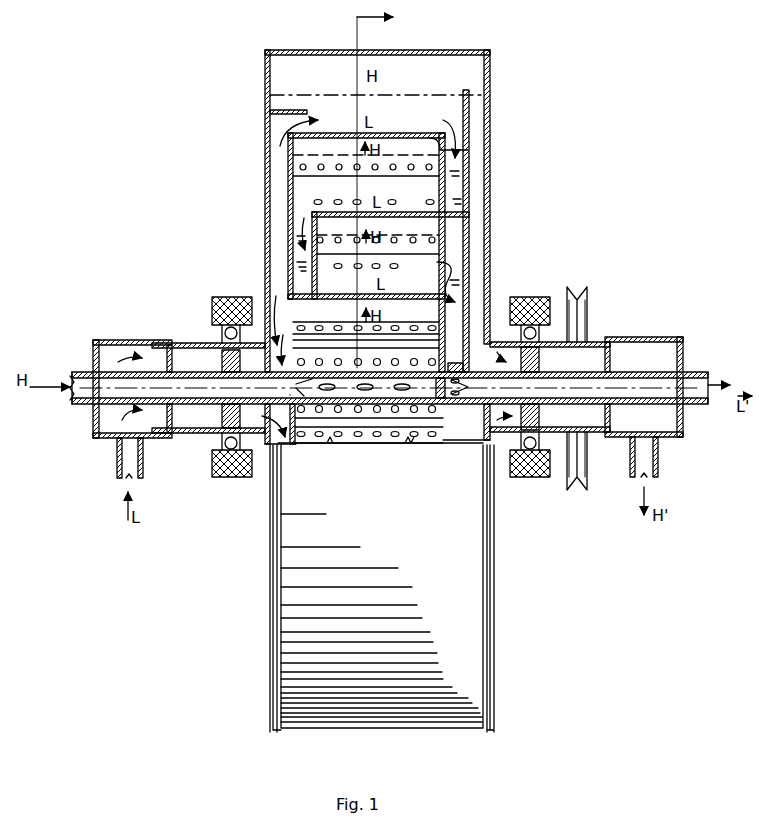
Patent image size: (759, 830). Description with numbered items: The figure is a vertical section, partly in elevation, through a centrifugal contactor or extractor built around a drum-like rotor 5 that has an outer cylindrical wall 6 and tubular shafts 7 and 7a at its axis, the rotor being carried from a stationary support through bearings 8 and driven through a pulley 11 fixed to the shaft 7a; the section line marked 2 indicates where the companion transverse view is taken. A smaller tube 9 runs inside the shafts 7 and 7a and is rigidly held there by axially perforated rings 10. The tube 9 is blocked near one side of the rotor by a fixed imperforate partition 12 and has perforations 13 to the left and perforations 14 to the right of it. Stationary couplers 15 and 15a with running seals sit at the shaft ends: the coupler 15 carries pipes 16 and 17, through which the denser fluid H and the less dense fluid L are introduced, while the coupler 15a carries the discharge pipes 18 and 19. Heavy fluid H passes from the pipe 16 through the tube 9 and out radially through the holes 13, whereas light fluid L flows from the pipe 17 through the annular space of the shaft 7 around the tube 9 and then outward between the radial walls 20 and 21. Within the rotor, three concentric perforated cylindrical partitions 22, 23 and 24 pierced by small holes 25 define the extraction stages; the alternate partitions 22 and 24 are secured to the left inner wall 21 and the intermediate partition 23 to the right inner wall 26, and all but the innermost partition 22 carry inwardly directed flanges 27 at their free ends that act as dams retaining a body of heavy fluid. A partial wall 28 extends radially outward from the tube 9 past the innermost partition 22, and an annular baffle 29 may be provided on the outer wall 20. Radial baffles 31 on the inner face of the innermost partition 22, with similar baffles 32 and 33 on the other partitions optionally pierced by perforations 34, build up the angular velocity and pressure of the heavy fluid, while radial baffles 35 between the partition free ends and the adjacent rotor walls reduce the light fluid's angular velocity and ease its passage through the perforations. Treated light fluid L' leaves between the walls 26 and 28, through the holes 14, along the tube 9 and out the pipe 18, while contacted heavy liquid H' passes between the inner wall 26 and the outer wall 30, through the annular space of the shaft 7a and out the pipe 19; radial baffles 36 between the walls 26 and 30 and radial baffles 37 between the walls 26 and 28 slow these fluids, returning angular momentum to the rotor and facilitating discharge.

The section line 2-2 / shaft rotation direction 2 is at (552, 201).
The rotor 5 is at (502, 168).
The outer cylindrical wall 6 is at (456, 52).
The tubular shaft 7 is at (196, 343).
The tubular shaft 7a is at (560, 350).
The bearings 8 is at (222, 442).
The tube 9 is at (221, 378).
The axially perforated rings 10 is at (222, 364).
The pulley 11 is at (582, 490).
The partition 12 is at (432, 397).
The perforations 13 is at (295, 389).
The perforations 14 is at (510, 385).
The coupler 15 is at (118, 338).
The coupler 15a is at (632, 340).
The pipe 16 is at (80, 404).
The pipe 17 is at (117, 470).
The pipe 18 is at (690, 402).
The pipe 19 is at (658, 460).
The radial wall 20 is at (266, 177).
The radial wall 21 is at (293, 231).
The partition 22 is at (303, 300).
The partition 23 is at (420, 198).
The partition 24 is at (350, 132).
The holes 25 is at (406, 134).
The inner wall 26 is at (463, 99).
The flanges 27 is at (442, 128).
The partial wall 28 is at (437, 262).
The annular baffle 29 is at (289, 110).
The outer wall 30 is at (491, 56).
The radial baffles 31 is at (305, 305).
The baffles 32 is at (440, 245).
The baffles 33 is at (324, 177).
The perforations 34 is at (356, 165).
The radial baffles 35 is at (306, 262).
The radial baffles 36 is at (470, 106).
The radial baffles 37 is at (457, 288).